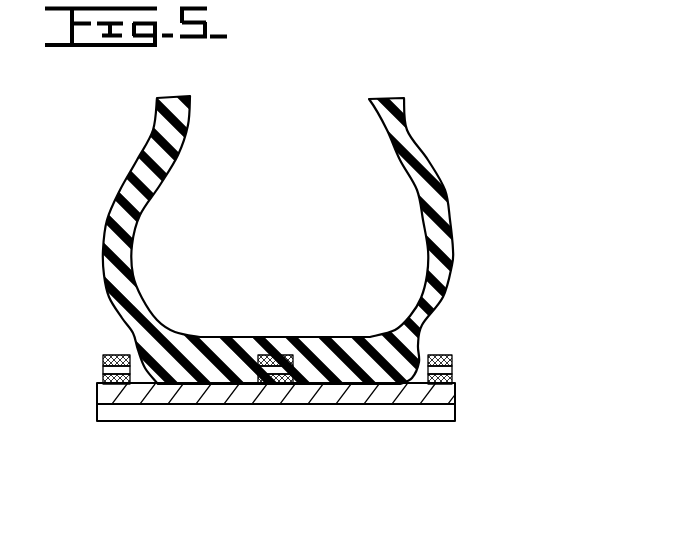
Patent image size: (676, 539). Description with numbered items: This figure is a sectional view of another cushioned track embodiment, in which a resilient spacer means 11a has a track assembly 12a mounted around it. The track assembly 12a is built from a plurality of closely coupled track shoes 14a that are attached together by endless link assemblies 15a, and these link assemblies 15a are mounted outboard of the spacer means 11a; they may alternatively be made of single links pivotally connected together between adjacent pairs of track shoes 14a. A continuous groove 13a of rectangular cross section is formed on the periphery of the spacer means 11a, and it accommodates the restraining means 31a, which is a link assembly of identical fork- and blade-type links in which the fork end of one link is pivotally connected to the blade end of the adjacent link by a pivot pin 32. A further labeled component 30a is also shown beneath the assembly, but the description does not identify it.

The resilient spacer means 11a is at (403, 152).
The track assembly 12a is at (466, 334).
The continuous groove 13a is at (261, 358).
The track shoes 14a is at (440, 397).
The endless link assemblies 15a is at (95, 352).
The lower plate layer 30a is at (152, 412).
The restraining means 31a is at (286, 399).
The pivot pin 32 is at (277, 370).